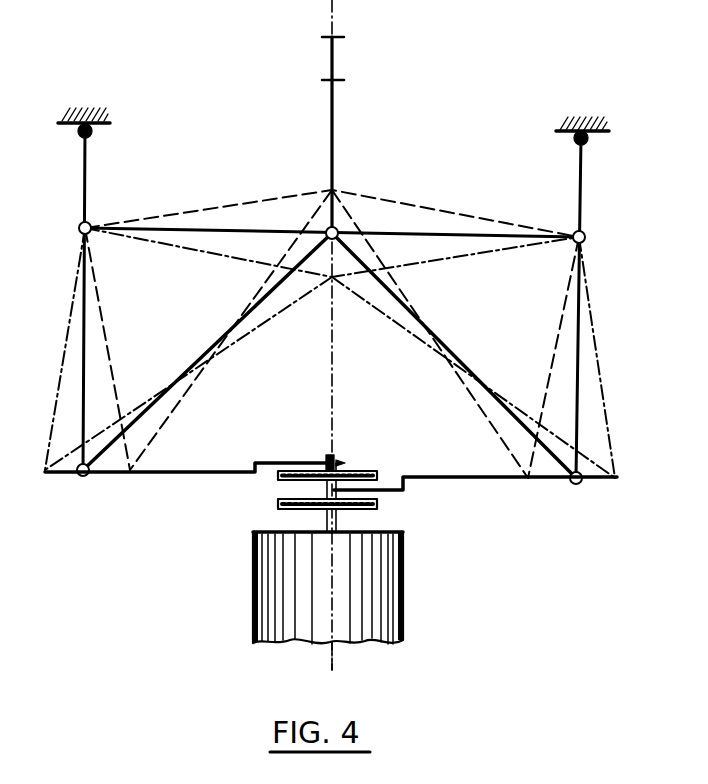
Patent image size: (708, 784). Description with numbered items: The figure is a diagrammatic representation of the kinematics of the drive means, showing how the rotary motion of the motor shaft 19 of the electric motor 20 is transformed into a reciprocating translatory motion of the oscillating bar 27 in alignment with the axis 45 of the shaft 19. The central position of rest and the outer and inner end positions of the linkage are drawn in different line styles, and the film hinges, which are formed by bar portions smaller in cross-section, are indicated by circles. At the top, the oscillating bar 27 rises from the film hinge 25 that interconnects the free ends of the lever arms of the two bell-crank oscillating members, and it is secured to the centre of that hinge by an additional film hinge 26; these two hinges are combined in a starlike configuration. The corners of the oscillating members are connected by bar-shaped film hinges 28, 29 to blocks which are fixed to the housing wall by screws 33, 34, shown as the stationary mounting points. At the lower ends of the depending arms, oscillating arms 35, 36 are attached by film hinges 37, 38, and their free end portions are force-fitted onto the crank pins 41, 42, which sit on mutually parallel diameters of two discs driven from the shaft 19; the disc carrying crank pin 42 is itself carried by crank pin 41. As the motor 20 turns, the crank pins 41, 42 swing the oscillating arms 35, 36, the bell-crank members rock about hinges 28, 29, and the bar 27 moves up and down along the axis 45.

The shaft 19 is at (323, 520).
The electric motor 20 is at (403, 610).
The film hinge 25 is at (340, 228).
The additional film hinge 26 is at (393, 173).
The oscillating bar 27 is at (334, 105).
The bar-shaped film hinge 28 is at (583, 175).
The bar-shaped film hinge 29 is at (83, 176).
The screw 33 is at (573, 146).
The screw 34 is at (92, 133).
The oscillating arm 35 is at (203, 470).
The oscillating arm 36 is at (470, 482).
The film hinge 37 is at (87, 480).
The film hinge 38 is at (575, 487).
The crank pin 41 is at (323, 490).
The crank pin 42 is at (341, 457).
The axis 45 is at (331, 390).